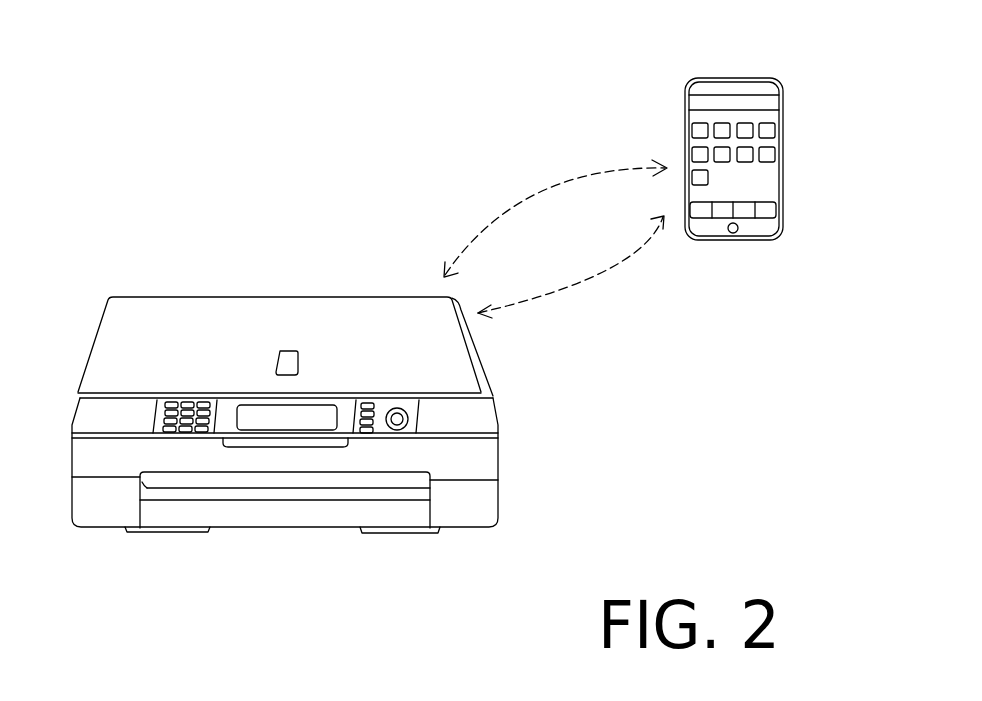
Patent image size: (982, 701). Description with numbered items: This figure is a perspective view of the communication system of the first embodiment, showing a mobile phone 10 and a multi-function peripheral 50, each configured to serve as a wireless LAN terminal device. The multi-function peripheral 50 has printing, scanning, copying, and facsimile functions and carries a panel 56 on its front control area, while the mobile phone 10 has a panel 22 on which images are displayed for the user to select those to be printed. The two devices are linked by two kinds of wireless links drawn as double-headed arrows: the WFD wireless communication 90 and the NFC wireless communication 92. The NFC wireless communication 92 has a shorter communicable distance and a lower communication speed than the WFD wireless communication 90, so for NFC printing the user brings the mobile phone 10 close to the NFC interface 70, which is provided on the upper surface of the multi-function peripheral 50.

The mobile phone 10 is at (753, 49).
The panel 22 is at (767, 182).
The multi-function peripheral 50 is at (148, 255).
The panel 56 is at (300, 418).
The NFC interface 70 is at (285, 350).
The WFD wireless communication 90 is at (608, 270).
The NFC wireless communication 92 is at (537, 190).